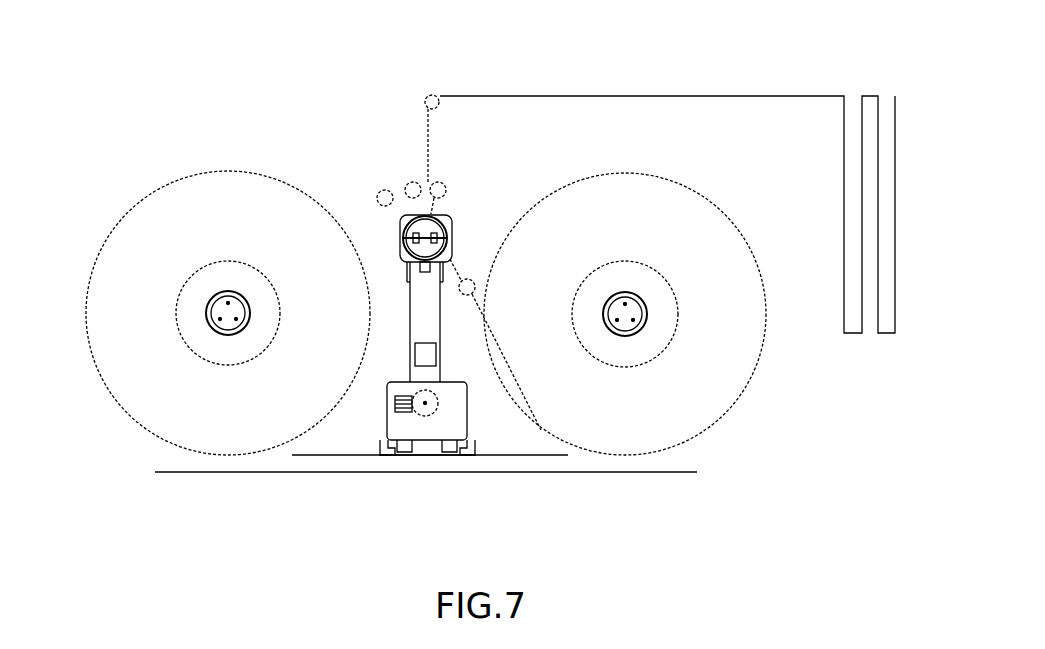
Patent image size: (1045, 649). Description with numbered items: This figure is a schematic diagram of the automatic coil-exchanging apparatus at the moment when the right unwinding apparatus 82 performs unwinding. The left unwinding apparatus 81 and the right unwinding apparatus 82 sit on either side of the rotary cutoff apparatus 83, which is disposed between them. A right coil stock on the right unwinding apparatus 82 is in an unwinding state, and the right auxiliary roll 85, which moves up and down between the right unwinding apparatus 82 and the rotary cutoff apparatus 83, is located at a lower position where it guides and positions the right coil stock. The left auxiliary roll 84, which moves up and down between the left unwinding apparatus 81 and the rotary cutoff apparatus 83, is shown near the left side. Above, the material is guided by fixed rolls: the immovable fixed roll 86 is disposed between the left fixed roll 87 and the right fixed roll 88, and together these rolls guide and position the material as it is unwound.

The left unwinding apparatus 81 is at (150, 405).
The right unwinding apparatus 82 is at (703, 412).
The rotary cutoff apparatus 83 is at (437, 425).
The left auxiliary roll 84 is at (380, 193).
The right auxiliary roll 85 is at (471, 294).
The immovable fixed roll 86 is at (438, 96).
The left fixed roll 87 is at (407, 181).
The right fixed roll 88 is at (443, 184).